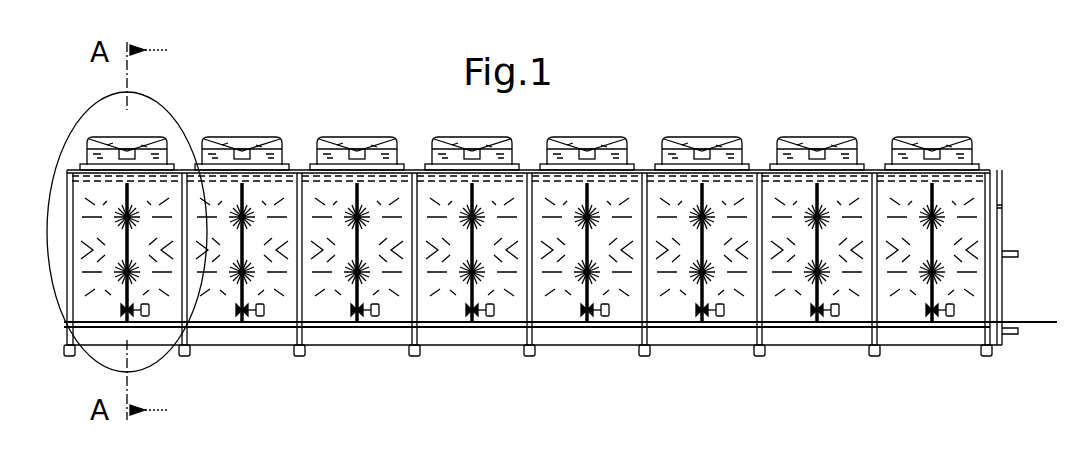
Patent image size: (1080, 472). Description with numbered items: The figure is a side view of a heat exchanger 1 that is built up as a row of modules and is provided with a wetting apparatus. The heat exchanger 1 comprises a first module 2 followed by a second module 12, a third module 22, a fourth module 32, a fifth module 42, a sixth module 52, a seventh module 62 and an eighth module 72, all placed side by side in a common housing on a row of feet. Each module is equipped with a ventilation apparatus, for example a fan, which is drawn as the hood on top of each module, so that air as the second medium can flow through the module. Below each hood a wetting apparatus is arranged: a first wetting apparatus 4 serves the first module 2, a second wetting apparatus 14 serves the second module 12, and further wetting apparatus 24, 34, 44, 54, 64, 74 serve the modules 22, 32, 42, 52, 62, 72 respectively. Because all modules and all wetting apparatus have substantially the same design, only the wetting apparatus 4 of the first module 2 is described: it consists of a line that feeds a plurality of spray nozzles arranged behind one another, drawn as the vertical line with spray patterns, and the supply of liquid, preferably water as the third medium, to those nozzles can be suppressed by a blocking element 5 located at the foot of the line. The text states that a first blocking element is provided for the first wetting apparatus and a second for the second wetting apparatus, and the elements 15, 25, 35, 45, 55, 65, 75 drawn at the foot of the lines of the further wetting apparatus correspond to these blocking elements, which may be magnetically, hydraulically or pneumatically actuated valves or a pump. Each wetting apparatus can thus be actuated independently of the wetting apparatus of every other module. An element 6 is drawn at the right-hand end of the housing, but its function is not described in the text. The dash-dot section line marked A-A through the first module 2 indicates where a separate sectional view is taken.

The heat exchanger 1 is at (890, 104).
The first module 2 is at (90, 112).
The wetting apparatus 4 is at (123, 287).
The blocking element 5 is at (145, 316).
The end wall / outlet connection 6 is at (963, 325).
The second module 12 is at (270, 138).
The second wetting apparatus 14 is at (238, 292).
The valve 15 is at (259, 316).
The third module 22 is at (383, 138).
The third wetting apparatus 24 is at (353, 288).
The valve 25 is at (374, 316).
The fourth module 32 is at (498, 138).
The fourth wetting apparatus 34 is at (468, 290).
The valve 35 is at (489, 316).
The fifth module 42 is at (612, 138).
The fifth wetting apparatus 44 is at (583, 290).
The valve 45 is at (604, 316).
The sixth module 52 is at (727, 138).
The sixth wetting apparatus 54 is at (698, 290).
The valve 55 is at (719, 316).
The seventh module 62 is at (842, 138).
The seventh wetting apparatus 64 is at (813, 290).
The valve 65 is at (834, 316).
The eighth module 72 is at (958, 138).
The eighth wetting apparatus 74 is at (928, 290).
The valve 75 is at (949, 316).